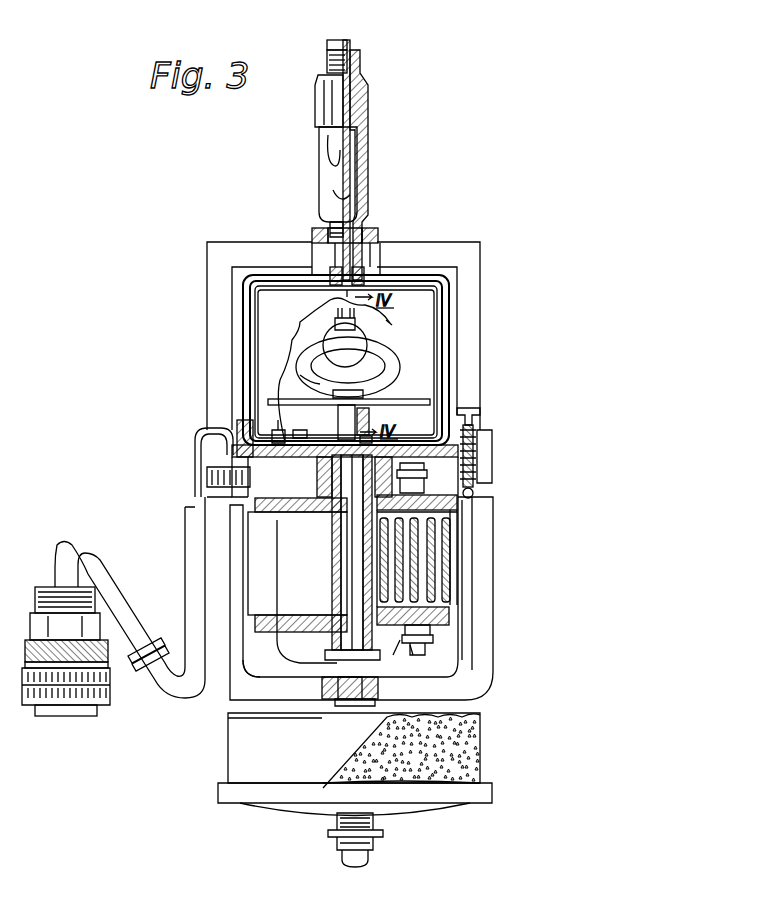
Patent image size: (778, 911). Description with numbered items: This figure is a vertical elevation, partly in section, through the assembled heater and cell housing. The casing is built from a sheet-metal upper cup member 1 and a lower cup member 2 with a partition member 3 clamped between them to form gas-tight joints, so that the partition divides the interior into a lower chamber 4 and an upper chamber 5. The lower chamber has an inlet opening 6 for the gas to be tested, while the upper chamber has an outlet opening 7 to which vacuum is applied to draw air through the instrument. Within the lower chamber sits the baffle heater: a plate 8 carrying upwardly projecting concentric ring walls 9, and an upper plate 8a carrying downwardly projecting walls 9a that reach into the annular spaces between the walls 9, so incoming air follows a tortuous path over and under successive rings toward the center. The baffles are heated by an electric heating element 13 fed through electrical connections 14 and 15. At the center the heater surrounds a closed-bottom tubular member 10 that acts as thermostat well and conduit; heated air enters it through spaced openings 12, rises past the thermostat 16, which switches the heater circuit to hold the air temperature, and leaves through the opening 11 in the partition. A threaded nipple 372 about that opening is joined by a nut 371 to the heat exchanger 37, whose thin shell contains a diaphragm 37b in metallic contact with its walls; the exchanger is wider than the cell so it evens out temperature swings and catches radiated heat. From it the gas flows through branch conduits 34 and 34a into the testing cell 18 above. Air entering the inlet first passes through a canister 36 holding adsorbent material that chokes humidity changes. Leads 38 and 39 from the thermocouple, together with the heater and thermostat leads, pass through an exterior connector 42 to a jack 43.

The upper cup member 1 is at (247, 342).
The lower cup member 2 is at (462, 522).
The partition member 3 is at (478, 448).
The lower chamber 4 is at (270, 661).
The upper chamber 5 is at (422, 349).
The inlet opening 6 is at (375, 703).
The outlet opening 7 is at (358, 268).
The plate 8 is at (455, 590).
The upper plate 8a is at (458, 512).
The walls 9 is at (440, 578).
The walls 9a is at (440, 552).
The closed bottom tubular member 10 is at (473, 497).
The opening 11 is at (345, 440).
The spaced openings 12 is at (372, 590).
The electric heating element 13 is at (452, 625).
The electrical connection 14 is at (421, 473).
The electrical connection 15 is at (430, 637).
The thermostat 16 is at (352, 516).
The testing cell 18 is at (358, 337).
The branch conduit 34 is at (400, 378).
The branch conduit 34a is at (310, 366).
The canister 36 is at (228, 745).
The heat exchanger 37 is at (430, 397).
The diaphragm 37b is at (430, 755).
The lead 38 is at (320, 322).
The lead 39 is at (388, 327).
The exterior connector 42 is at (228, 468).
The jack 43 is at (82, 705).
The nut 371 is at (369, 421).
The threaded nipple 372 is at (395, 435).